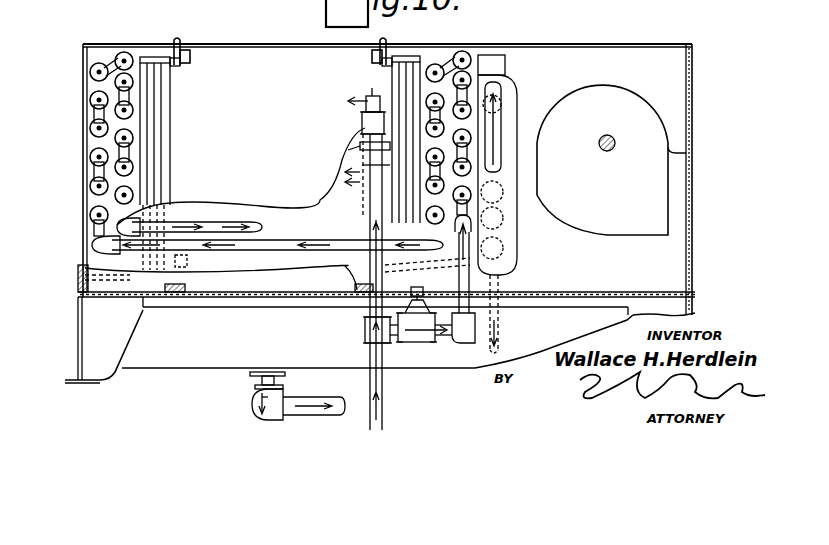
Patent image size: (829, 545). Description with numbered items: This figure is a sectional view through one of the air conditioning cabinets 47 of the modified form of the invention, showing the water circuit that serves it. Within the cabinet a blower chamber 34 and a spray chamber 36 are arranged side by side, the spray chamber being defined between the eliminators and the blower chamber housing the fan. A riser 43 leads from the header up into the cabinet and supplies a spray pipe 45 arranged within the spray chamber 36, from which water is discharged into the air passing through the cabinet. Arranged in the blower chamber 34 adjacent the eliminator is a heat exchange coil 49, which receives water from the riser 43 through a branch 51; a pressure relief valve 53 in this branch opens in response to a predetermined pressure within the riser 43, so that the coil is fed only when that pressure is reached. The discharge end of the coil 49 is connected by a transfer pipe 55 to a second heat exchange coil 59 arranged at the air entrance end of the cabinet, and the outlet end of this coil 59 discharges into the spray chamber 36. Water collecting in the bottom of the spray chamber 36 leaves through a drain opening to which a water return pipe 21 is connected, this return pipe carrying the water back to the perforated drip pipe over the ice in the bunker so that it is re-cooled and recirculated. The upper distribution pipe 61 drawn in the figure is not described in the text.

The water return pipe 21 is at (319, 414).
The blower chamber 34 is at (611, 178).
The spray chamber 36 is at (380, 210).
The riser 43 is at (383, 421).
The spray pipe 45 is at (362, 129).
The air conditioning cabinet 47 is at (83, 101).
The heat exchange coil 49 is at (437, 67).
The branch 51 is at (470, 336).
The pressure relief valve 53 is at (421, 327).
The transfer pipe 55 is at (296, 241).
The heat exchange coil 59 is at (108, 64).
The upper distribution pipe 61 is at (203, 228).